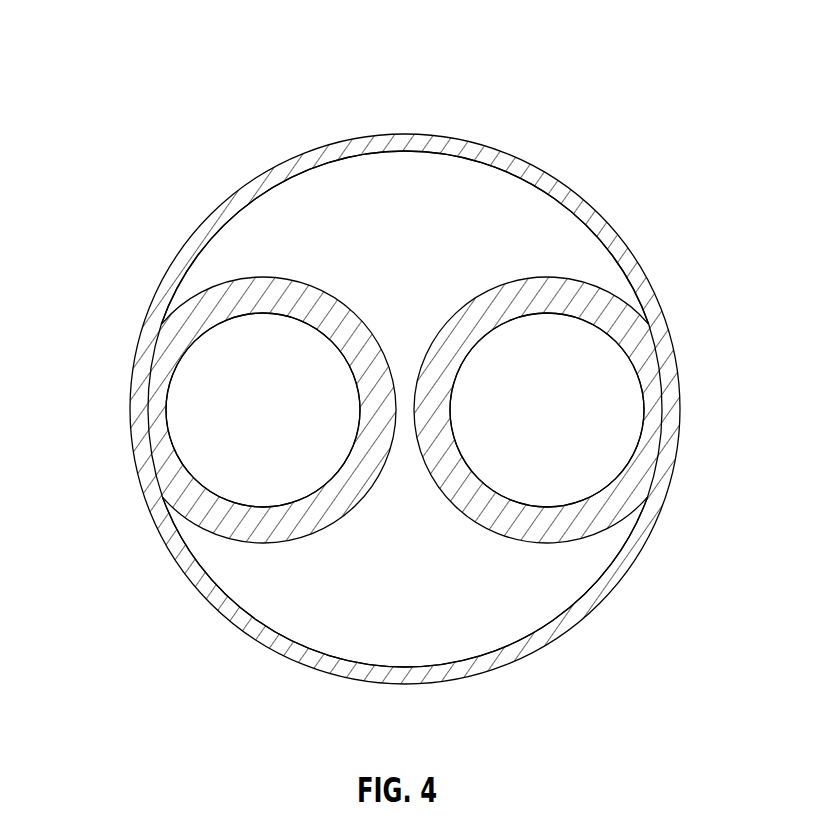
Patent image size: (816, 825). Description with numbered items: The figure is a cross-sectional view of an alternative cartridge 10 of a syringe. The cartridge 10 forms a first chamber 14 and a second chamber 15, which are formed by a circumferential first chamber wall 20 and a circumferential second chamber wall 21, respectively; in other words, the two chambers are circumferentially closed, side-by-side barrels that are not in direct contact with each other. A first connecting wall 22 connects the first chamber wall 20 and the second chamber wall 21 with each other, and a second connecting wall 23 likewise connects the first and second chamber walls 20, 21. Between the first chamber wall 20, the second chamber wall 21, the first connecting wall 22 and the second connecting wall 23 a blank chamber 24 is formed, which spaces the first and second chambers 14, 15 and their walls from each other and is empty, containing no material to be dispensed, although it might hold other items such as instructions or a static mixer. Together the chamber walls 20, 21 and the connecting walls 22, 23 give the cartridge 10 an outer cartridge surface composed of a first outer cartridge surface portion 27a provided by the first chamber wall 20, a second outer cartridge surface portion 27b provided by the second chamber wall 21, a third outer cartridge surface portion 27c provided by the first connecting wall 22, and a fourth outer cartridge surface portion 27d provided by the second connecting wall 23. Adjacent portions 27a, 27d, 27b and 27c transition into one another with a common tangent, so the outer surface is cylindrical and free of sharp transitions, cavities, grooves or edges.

The cartridge 10 is at (361, 84).
The first chamber 14 is at (559, 425).
The second chamber 15 is at (276, 425).
The first chamber wall 20 is at (599, 293).
The second chamber wall 21 is at (188, 348).
The first connecting wall 22 is at (513, 156).
The second connecting wall 23 is at (255, 640).
The blank chamber 24 is at (338, 198).
The first outer cartridge surface portion 27a is at (681, 410).
The second outer cartridge surface portion 27b is at (128, 428).
The third outer cartridge surface portion 27c is at (422, 134).
The fourth outer cartridge surface portion 27d is at (443, 683).